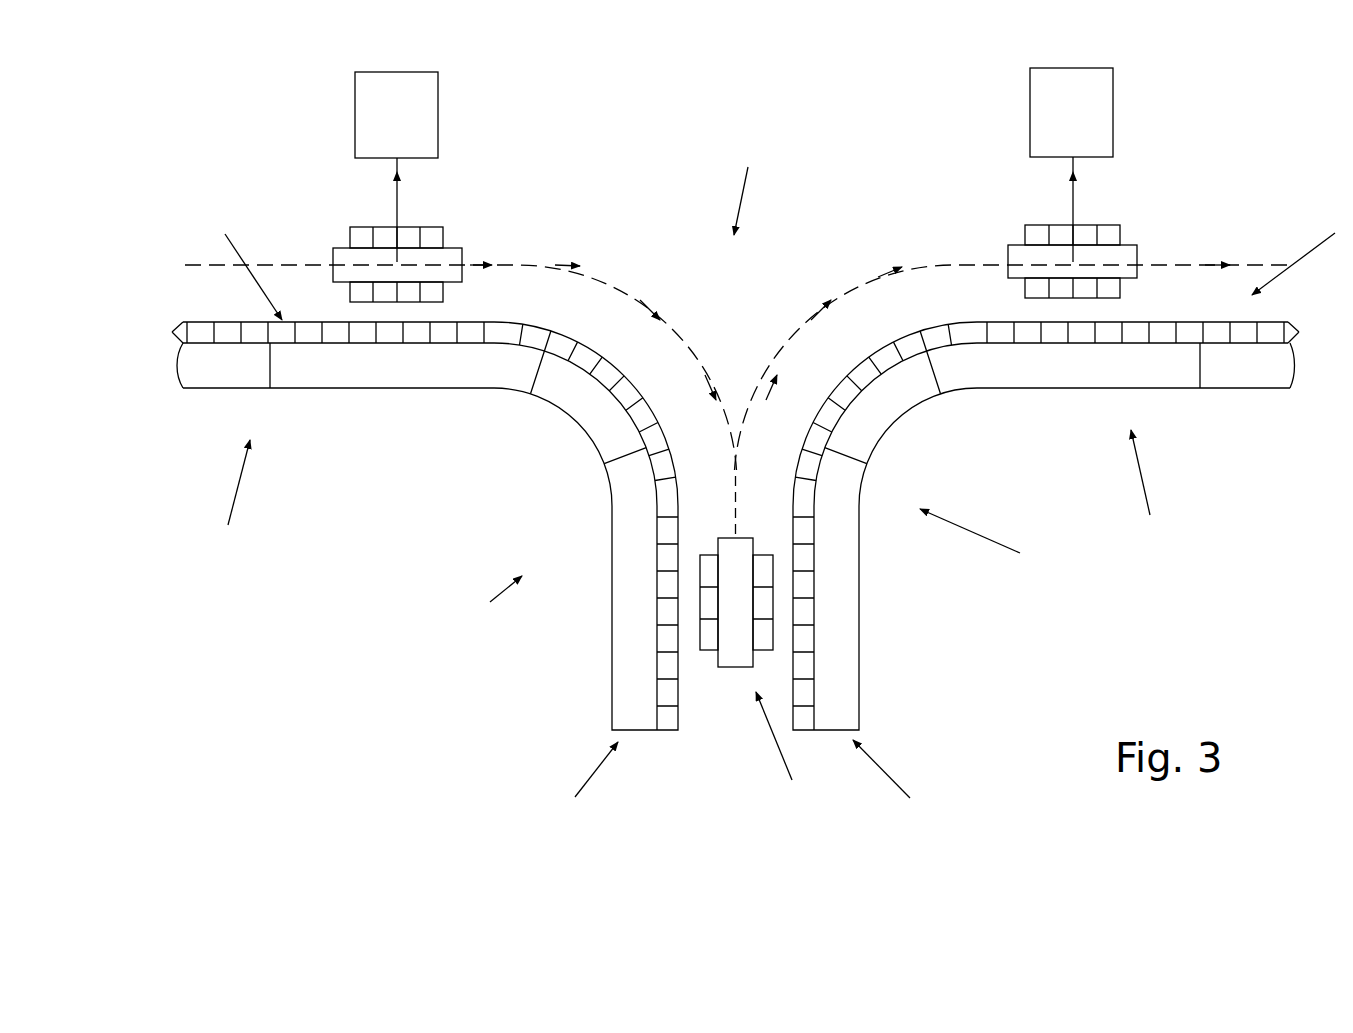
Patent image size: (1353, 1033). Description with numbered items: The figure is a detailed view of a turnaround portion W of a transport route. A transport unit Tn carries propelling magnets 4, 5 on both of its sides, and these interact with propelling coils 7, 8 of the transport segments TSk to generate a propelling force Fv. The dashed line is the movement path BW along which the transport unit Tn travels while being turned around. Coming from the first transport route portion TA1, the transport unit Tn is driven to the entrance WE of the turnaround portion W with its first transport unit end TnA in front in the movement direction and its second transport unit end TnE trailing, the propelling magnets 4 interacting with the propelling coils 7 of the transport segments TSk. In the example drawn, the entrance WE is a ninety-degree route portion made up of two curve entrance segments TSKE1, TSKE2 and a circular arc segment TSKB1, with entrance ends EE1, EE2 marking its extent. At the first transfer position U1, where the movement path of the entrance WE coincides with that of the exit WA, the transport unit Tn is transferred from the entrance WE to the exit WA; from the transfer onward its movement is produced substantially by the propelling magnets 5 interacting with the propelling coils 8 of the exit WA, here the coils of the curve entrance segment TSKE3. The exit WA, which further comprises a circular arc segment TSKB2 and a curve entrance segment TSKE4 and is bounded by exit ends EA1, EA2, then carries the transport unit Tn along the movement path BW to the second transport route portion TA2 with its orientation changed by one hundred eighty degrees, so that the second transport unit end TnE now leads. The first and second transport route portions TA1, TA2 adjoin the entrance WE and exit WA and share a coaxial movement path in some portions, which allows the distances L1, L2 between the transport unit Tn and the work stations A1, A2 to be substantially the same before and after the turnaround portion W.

The propelling magnets 4 is at (360, 302).
The propelling magnets 5 is at (1084, 294).
The propelling coils 7 is at (468, 332).
The propelling coils 8 is at (1003, 345).
The work station A1 is at (396, 115).
The work station A2 is at (1071, 112).
The distance L1 is at (411, 210).
The distance L2 is at (1088, 209).
The transport unit Tn is at (344, 246).
The first transport unit end TnA is at (455, 258).
The second transport unit end TnE is at (1153, 201).
The propelling force Fv is at (476, 264).
The turnaround portion W is at (748, 186).
The movement path BW is at (610, 286).
The entrance of the turnaround portion WE is at (486, 610).
The exit of the turnaround portion WA is at (991, 545).
The first transport route portion TA1 is at (242, 264).
The second transport route portion TA2 is at (1298, 250).
The transport segment TSk is at (1284, 434).
The curve entrance segment TSKE1 is at (397, 366).
The curve entrance segment TSKE2 is at (628, 516).
The curve entrance segment TSKE3 is at (845, 690).
The curve entrance segment TSKE4 is at (1170, 356).
The circular arc segment TSKB1 is at (590, 396).
The circular arc segment TSKB2 is at (858, 411).
The entrance end EE1 is at (232, 494).
The entrance end EE2 is at (585, 786).
The exit end EA1 is at (1156, 490).
The exit end EA2 is at (904, 785).
The first transfer position U1 is at (786, 753).